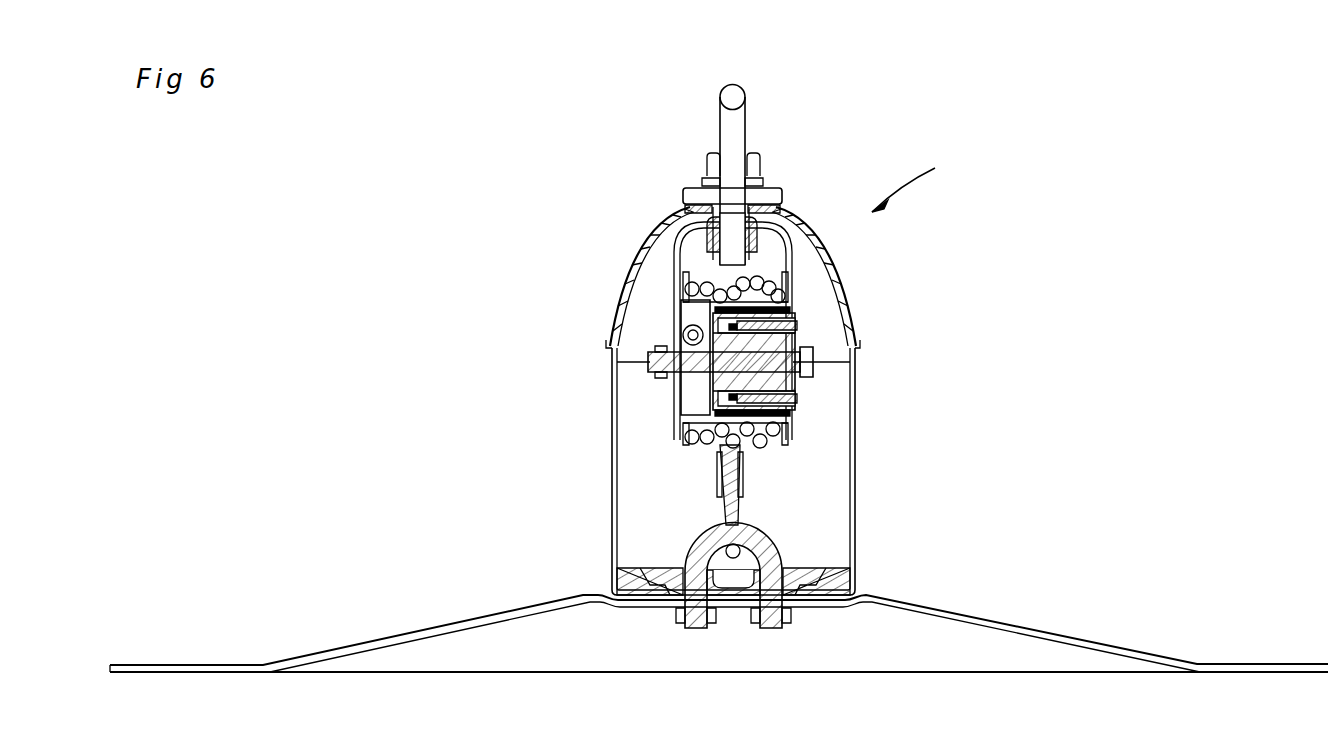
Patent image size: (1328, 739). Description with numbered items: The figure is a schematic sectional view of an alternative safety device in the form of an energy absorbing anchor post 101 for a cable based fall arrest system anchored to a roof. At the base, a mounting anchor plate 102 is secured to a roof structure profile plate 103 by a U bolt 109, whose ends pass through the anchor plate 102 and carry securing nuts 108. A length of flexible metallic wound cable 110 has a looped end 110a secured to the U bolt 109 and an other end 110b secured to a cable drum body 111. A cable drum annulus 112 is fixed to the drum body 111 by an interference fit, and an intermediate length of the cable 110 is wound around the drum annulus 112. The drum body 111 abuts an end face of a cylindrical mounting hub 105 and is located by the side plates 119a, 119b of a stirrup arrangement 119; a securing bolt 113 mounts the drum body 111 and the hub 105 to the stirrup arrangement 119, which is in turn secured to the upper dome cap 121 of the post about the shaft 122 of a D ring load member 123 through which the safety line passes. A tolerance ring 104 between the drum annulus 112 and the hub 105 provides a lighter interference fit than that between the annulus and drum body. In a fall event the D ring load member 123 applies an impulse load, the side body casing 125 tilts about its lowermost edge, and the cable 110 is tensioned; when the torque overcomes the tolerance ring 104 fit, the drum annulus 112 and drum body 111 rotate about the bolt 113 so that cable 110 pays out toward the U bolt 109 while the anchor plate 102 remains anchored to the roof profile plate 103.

The energy absorbing anchor post 101 is at (936, 185).
The mounting anchor plate 102 is at (837, 583).
The roof structure profile plate 103 is at (977, 614).
The tolerance ring 104 is at (768, 343).
The cylindrical mounting hub 105 is at (780, 361).
The securing nuts 108 is at (787, 617).
The U bolt 109 is at (770, 562).
The flexible metallic wound cable 110 is at (742, 280).
The looped end of cable 110a is at (735, 516).
The other end of cable 110b is at (690, 335).
The cable drum body 111 is at (660, 378).
The cable drum annulus 112 is at (790, 315).
The securing bolt 113 is at (788, 362).
The stirrup arrangement 119 is at (758, 292).
The side plate of stirrup arrangement 119a is at (673, 313).
The side plate of stirrup arrangement 119b is at (792, 431).
The upper dome cap 121 is at (656, 243).
The shaft of D ring load member 122 is at (735, 226).
The D ring load member 123 is at (737, 118).
The side body casing 125 is at (852, 484).